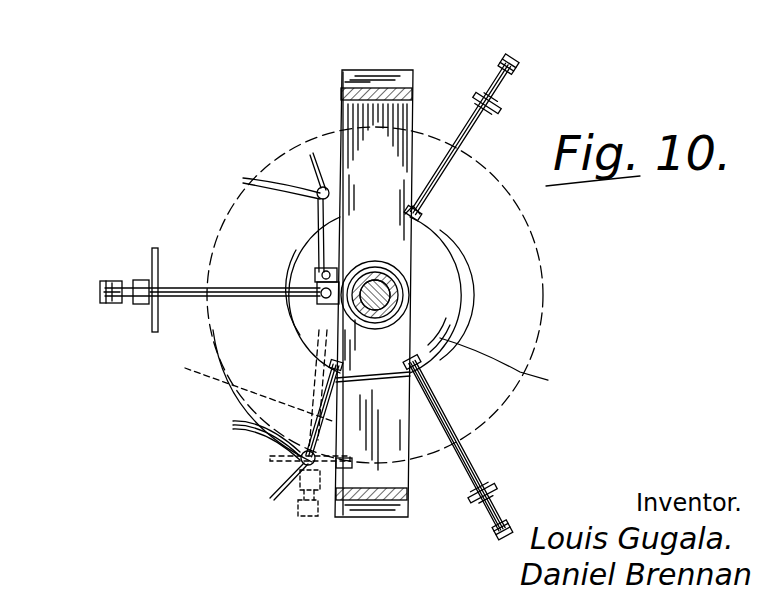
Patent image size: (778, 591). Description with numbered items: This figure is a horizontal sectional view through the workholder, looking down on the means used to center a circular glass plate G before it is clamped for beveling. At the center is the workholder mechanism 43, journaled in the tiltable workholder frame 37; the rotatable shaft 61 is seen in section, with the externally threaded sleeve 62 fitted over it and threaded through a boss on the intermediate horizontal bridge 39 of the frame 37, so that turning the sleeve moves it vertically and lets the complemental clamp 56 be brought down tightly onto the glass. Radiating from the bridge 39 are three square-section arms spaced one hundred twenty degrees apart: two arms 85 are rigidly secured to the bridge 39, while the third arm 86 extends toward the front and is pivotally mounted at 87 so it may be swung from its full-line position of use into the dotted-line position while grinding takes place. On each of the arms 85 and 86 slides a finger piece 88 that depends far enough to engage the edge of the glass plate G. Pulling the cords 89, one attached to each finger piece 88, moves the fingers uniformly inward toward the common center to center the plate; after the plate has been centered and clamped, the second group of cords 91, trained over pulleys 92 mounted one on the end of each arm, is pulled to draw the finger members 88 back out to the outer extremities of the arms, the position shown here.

The tiltable workholder frame 37 is at (401, 72).
The intermediate horizontal bridge 39 is at (346, 117).
The workholder mechanism 43 is at (464, 307).
The complemental clamp 56 is at (504, 367).
The rotatable shaft 61 is at (396, 262).
The externally threaded sleeve 62 is at (382, 293).
The radial arms 85 is at (460, 168).
The third arm 86 is at (197, 288).
The pivotal mounting 87 is at (315, 281).
The finger piece 88 is at (500, 110).
The cords 89 is at (272, 212).
The cords 91 is at (470, 128).
The pulleys 92 is at (516, 62).
The glass plate G is at (538, 350).